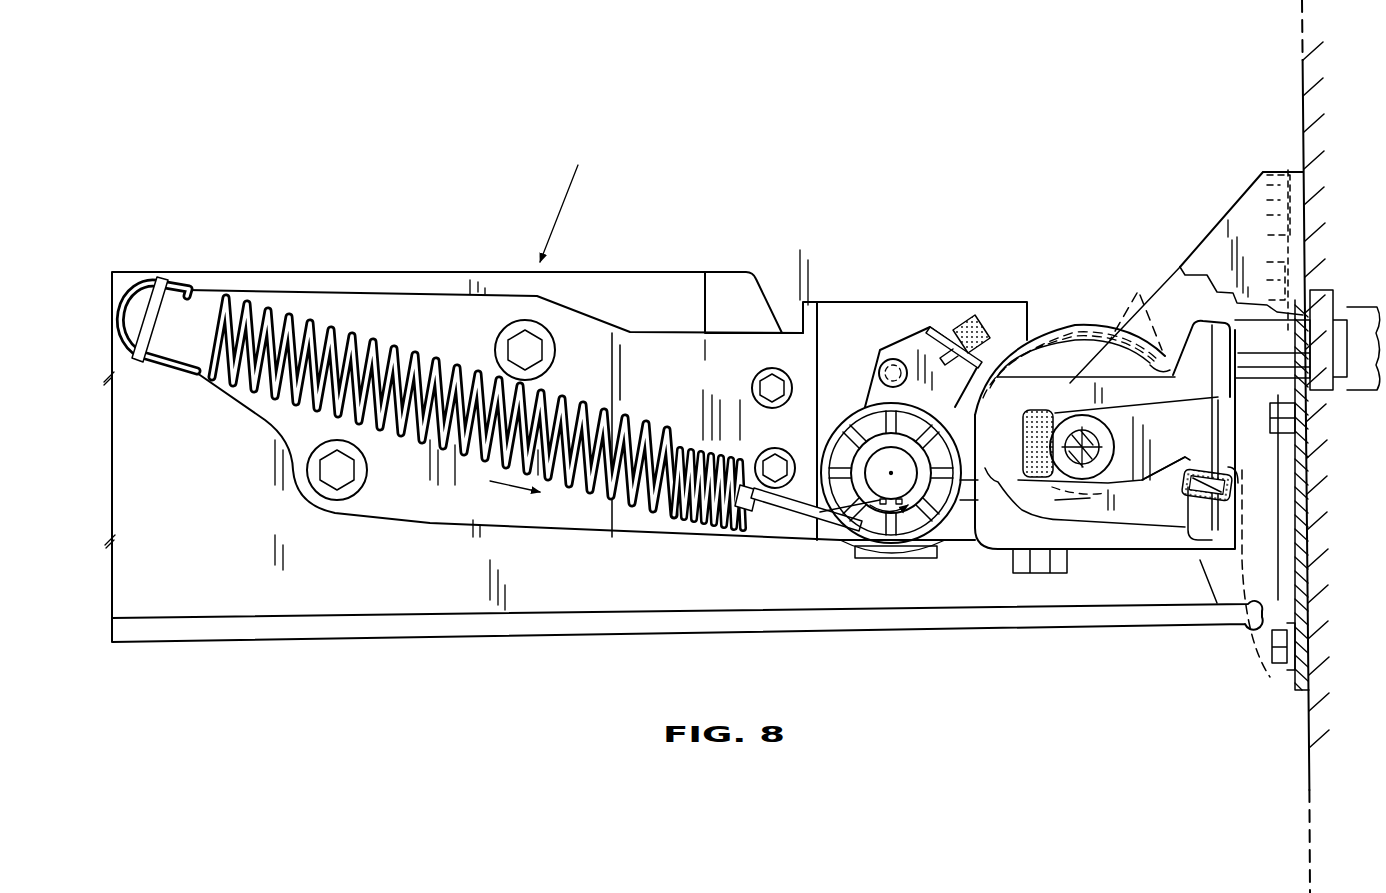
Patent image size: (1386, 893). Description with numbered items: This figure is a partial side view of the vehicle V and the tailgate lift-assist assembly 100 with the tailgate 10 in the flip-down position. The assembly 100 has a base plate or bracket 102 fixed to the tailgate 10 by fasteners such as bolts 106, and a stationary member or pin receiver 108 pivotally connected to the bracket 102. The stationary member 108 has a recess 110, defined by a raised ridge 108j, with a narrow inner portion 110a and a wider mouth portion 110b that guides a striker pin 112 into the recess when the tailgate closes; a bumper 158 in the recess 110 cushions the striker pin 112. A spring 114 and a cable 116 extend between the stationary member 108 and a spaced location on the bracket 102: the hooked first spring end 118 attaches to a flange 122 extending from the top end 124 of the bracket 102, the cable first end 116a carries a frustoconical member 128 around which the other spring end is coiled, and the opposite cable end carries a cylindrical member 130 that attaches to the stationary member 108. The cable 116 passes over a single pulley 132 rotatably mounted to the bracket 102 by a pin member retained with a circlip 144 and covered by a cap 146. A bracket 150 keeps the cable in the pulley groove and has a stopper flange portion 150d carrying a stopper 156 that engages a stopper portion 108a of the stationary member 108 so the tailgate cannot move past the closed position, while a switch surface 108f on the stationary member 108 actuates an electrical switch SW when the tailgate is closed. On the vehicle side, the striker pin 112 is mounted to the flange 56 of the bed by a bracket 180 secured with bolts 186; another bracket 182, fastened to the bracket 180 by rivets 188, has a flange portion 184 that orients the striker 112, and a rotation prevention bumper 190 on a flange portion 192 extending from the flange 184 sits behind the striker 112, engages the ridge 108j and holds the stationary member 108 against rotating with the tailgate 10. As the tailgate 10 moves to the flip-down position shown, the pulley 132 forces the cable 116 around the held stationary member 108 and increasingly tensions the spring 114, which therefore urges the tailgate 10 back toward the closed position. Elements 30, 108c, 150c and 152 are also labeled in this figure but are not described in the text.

The tailgate 10 is at (528, 643).
The pivot pin 30 is at (1074, 432).
The flange 56 is at (1300, 70).
The tailgate lift-assist assembly 100 is at (437, 567).
The bracket 102 is at (385, 529).
The bolts 106 is at (523, 347).
The stationary member 108 is at (1112, 552).
The stopper portion 108a is at (1157, 323).
The arcuate wall of clamp block 108c is at (1080, 328).
The switch surface 108f is at (1298, 416).
The raised ridge 108j is at (1072, 505).
The recess 110 is at (1192, 420).
The inner portion 110a is at (1060, 478).
The mouth portion 110b is at (1167, 483).
The striker pin 112 is at (1095, 480).
The spring 114 is at (375, 335).
The cable 116 is at (800, 522).
The cable first end 116a is at (763, 500).
The first spring end 118 is at (185, 284).
The flange 122 is at (160, 285).
The top end 124 is at (160, 318).
The frustoconical member 128 is at (736, 500).
The cylindrical member 130 is at (1128, 313).
The pulley 132 is at (825, 446).
The circlip 144 is at (880, 503).
The cap 146 is at (900, 485).
The bracket 150 is at (868, 550).
The wheel mounting plate 150c is at (886, 559).
The stopper flange portion 150d is at (938, 332).
The roller 152 is at (888, 362).
The stopper 156 is at (965, 328).
The bumper 158 is at (1032, 480).
The bracket 180 is at (1232, 205).
The bracket 182 is at (1273, 464).
The flange portion 184 is at (1090, 320).
The bolts 186 is at (1266, 172).
The rivets 188 is at (1277, 573).
The rotation prevention bumper 190 is at (1232, 492).
The flange portion 192 is at (1205, 492).
The electrical switch SW is at (1328, 312).
The vehicle V is at (1295, 752).